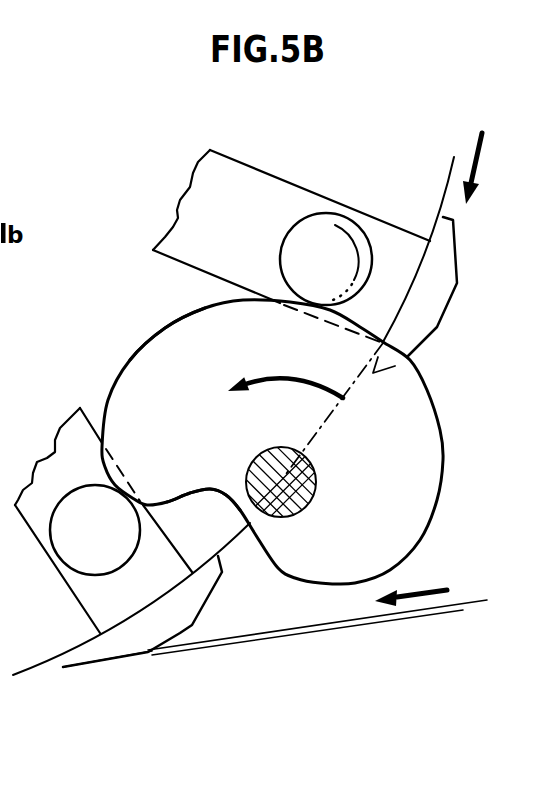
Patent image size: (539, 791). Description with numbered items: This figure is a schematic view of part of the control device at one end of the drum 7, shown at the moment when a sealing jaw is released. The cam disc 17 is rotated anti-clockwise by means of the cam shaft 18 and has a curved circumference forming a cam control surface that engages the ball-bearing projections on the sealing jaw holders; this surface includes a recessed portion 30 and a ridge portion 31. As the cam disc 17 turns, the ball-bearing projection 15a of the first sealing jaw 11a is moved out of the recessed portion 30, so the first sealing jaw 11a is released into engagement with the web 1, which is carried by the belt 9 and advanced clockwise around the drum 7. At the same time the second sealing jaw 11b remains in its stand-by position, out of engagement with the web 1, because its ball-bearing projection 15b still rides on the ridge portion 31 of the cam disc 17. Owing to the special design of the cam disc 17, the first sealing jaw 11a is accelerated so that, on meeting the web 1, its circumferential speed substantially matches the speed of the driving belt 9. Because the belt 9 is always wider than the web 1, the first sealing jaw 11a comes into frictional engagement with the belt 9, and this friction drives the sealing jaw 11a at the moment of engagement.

The web 1 is at (273, 628).
The drum 7 is at (43, 658).
The belt 9 is at (208, 648).
The first sealing jaw 11a is at (113, 643).
The second sealing jaw 11b is at (443, 245).
The ball-bearing projection 15a is at (63, 548).
The ball-bearing projection 15b is at (340, 220).
The cam disc 17 is at (395, 502).
The cam shaft 18 is at (265, 457).
The recessed portion 30 is at (195, 497).
The ridge portion 31 is at (148, 342).